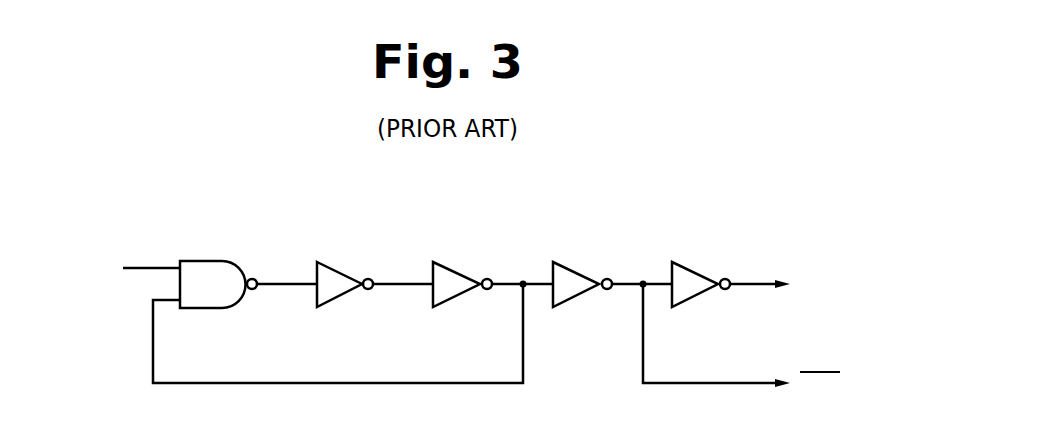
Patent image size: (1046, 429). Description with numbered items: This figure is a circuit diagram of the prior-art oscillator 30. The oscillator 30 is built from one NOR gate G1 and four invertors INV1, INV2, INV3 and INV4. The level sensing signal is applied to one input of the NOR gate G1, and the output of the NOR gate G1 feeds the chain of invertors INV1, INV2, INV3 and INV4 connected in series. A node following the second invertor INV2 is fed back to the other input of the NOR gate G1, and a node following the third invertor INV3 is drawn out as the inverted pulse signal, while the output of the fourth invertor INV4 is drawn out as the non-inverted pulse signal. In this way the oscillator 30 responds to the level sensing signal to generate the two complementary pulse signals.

The oscillator 30 is at (773, 177).
The NOR gate G1 is at (205, 260).
The first invertor INV1 is at (341, 268).
The second invertor INV2 is at (458, 268).
The third invertor INV3 is at (578, 268).
The fourth invertor INV4 is at (696, 268).